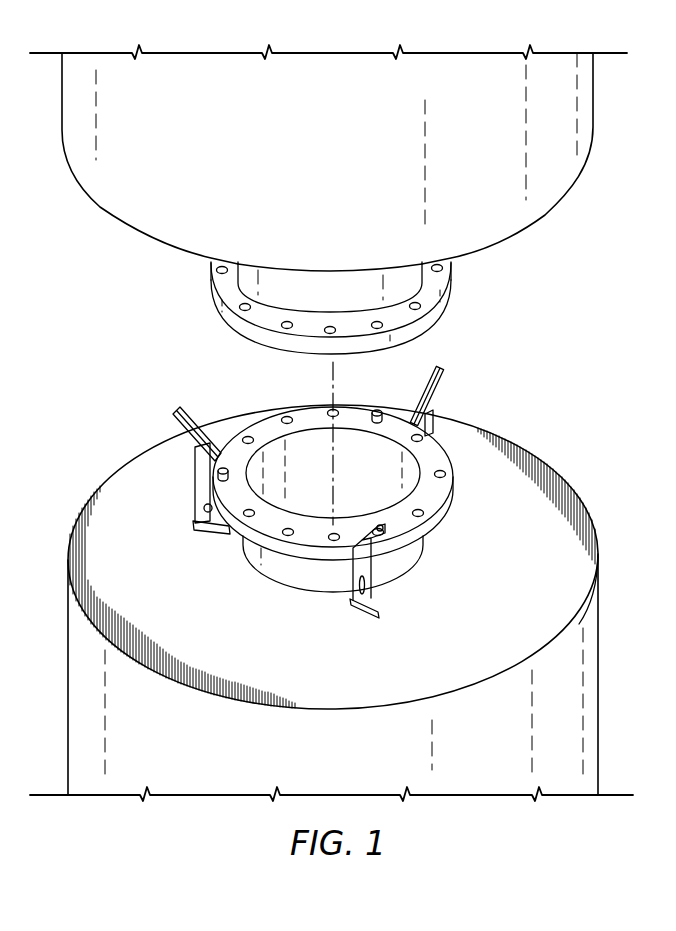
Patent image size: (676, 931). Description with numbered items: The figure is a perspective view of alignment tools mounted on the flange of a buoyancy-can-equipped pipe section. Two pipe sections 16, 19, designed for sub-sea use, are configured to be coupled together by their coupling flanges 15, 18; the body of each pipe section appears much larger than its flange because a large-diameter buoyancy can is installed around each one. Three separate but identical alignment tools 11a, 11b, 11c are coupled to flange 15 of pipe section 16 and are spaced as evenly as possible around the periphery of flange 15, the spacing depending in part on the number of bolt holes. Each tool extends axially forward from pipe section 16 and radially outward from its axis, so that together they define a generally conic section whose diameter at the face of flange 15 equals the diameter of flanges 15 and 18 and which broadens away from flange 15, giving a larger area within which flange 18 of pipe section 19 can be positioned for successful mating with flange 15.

The pipe section 19 is at (581, 202).
The coupling flange 18 is at (451, 281).
The pipe section 16 is at (583, 466).
The coupling flange 15 is at (443, 513).
The alignment tool 11a is at (195, 490).
The alignment tool 11b is at (372, 572).
The alignment tool 11c is at (433, 420).